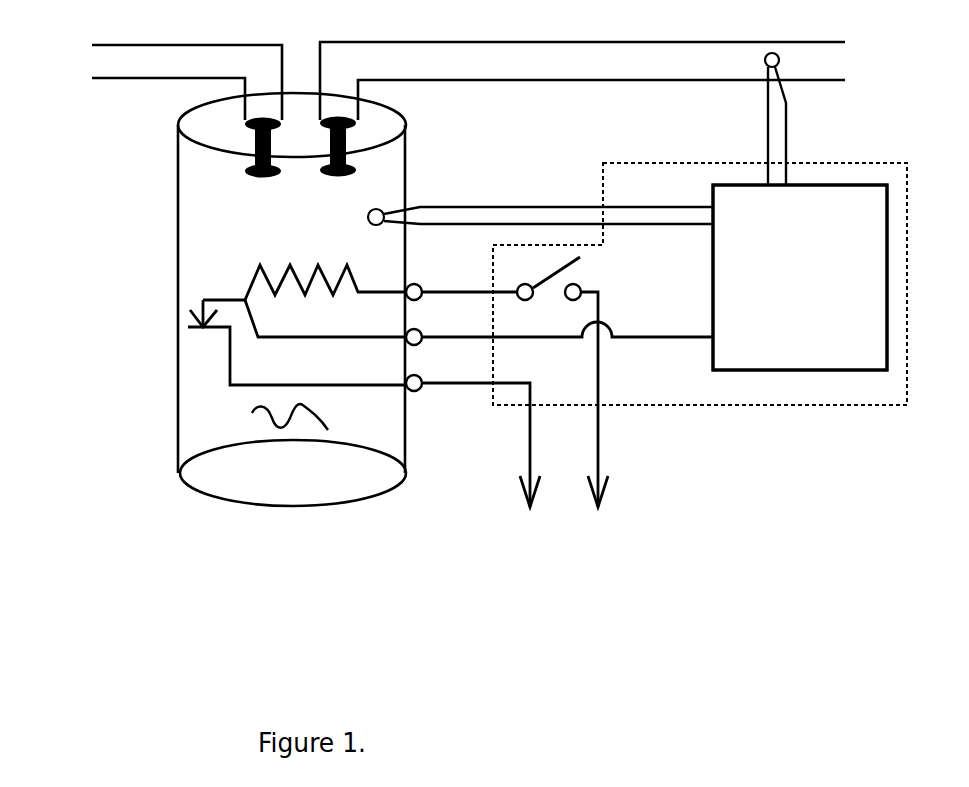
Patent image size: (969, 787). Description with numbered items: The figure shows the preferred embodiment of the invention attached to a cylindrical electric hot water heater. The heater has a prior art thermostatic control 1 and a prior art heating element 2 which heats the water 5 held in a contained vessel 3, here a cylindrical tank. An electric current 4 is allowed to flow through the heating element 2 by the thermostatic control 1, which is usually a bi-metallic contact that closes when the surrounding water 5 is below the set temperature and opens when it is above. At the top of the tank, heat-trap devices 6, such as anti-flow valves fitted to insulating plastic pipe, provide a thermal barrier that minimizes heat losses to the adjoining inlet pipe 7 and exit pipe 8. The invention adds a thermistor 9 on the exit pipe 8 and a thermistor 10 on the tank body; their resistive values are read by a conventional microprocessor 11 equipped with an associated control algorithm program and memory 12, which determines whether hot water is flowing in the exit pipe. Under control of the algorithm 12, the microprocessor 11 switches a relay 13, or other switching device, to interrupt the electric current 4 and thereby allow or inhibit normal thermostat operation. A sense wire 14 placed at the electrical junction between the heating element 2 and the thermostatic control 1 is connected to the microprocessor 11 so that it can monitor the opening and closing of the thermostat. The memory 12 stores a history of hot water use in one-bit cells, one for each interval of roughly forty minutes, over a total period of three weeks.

The thermostatic control 1 is at (227, 332).
The heating element 2 is at (307, 254).
The contained vessel 3 is at (175, 148).
The electric current 4 is at (515, 426).
The water 5 is at (192, 418).
The heat-trap devices 6 is at (311, 206).
The inlet pipe 7 is at (240, 61).
The exit pipe 8 is at (335, 60).
The thermistor 9 is at (691, 114).
The thermistor 10 is at (540, 198).
The microprocessor 11 is at (700, 284).
The control algorithm program and memory 12 is at (800, 277).
The relay 13 is at (713, 287).
The sense wire 14 is at (479, 322).